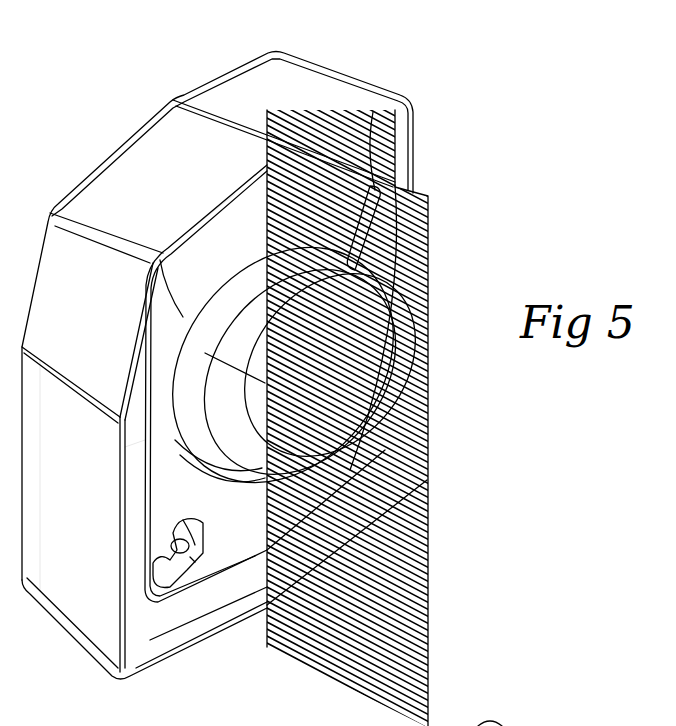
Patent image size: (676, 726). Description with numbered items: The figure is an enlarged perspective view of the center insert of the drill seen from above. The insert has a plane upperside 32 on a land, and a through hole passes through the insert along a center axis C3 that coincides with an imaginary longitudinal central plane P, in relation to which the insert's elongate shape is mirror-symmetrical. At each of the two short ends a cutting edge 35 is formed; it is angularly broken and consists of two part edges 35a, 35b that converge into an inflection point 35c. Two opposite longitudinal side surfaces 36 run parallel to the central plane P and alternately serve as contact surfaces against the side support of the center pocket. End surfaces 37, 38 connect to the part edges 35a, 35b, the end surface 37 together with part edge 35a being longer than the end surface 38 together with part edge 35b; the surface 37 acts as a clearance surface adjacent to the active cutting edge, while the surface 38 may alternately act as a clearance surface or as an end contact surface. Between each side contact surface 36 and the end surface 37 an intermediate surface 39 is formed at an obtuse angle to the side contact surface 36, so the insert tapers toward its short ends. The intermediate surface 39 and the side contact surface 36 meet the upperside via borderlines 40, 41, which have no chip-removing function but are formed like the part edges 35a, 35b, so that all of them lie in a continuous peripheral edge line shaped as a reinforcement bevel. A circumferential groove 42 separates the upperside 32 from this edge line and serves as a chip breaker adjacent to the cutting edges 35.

The upperside 32 is at (247, 554).
The cutting edge 35 is at (265, 165).
The part edge 35a is at (213, 225).
The part edge 35b is at (373, 112).
The inflection point 35c is at (571, 712).
The side contact surface 36 is at (79, 506).
The end surface 37 is at (180, 195).
The end surface 38 is at (312, 94).
The intermediate surface 39 is at (96, 313).
The borderline 40 is at (127, 382).
The borderline 41 is at (118, 558).
The circumferential groove 42 is at (125, 447).
The center axis C3 is at (223, 365).
The central plane P is at (414, 610).